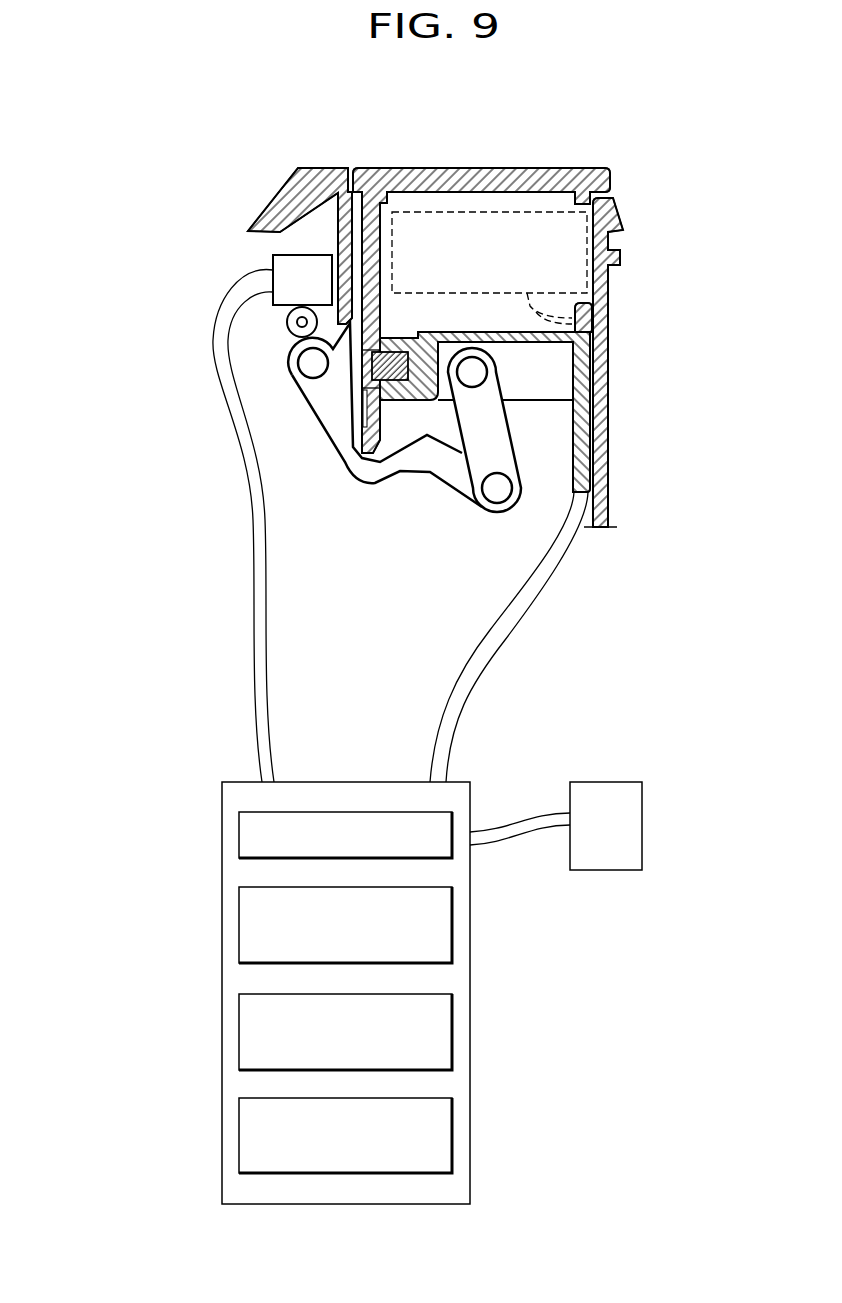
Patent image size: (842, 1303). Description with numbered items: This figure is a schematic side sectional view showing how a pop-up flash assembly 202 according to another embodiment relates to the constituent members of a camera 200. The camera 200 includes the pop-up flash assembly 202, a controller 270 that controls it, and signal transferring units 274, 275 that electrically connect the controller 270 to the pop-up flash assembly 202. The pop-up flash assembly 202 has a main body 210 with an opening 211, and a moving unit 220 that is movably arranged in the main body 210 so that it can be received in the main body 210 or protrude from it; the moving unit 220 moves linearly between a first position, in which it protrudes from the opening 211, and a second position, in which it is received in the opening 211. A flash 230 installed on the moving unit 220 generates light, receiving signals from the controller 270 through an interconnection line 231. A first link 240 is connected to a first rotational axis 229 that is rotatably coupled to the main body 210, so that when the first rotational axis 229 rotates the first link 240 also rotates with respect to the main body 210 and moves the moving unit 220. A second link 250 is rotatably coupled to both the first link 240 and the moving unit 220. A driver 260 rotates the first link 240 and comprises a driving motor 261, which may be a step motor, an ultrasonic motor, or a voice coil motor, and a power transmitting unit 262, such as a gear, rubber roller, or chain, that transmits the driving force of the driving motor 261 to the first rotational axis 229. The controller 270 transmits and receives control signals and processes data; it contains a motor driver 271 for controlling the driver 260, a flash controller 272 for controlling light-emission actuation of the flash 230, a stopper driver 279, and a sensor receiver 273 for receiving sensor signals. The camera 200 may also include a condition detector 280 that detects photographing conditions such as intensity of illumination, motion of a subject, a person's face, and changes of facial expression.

The camera 200 is at (176, 118).
The pop-up flash assembly 202 is at (557, 167).
The main body 210 is at (608, 293).
The opening 211 is at (590, 318).
The moving unit 220 is at (583, 412).
The first rotational axis 229 is at (313, 363).
The flash 230 is at (508, 212).
The interconnection line 231 is at (540, 305).
The first link 240 is at (405, 465).
The second link 250 is at (485, 432).
The driver 260 is at (201, 296).
The driving motor 261 is at (283, 293).
The power transmitting unit 262 is at (287, 320).
The controller 270 is at (355, 993).
The motor driver 271 is at (239, 835).
The flash controller 272 is at (239, 926).
The sensor receiver 273 is at (239, 1136).
The signal transferring unit 274 is at (260, 673).
The signal transferring unit 275 is at (452, 710).
The stopper driver 279 is at (239, 1031).
The condition detector 280 is at (642, 827).